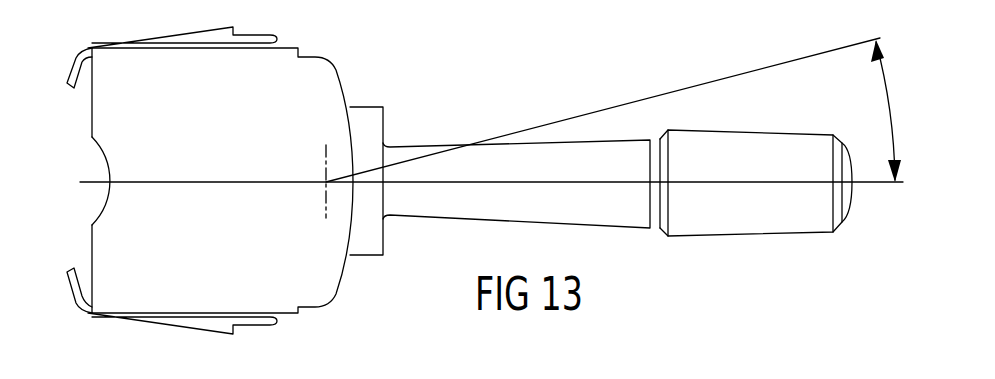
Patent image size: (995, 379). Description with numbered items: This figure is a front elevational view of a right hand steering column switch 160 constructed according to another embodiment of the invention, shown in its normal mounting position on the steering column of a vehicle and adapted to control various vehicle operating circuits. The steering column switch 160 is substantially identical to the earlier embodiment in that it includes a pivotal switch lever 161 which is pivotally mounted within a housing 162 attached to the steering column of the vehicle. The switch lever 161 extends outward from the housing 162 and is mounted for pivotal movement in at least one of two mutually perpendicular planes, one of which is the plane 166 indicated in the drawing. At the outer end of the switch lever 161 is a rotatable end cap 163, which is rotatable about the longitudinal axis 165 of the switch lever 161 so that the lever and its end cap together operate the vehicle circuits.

The steering column switch 160 is at (468, 118).
The switch lever 161 is at (542, 155).
The housing 162 is at (322, 78).
The rotatable end cap 163 is at (753, 148).
The longitudinal axis 165 is at (873, 186).
The plane 166 is at (886, 107).